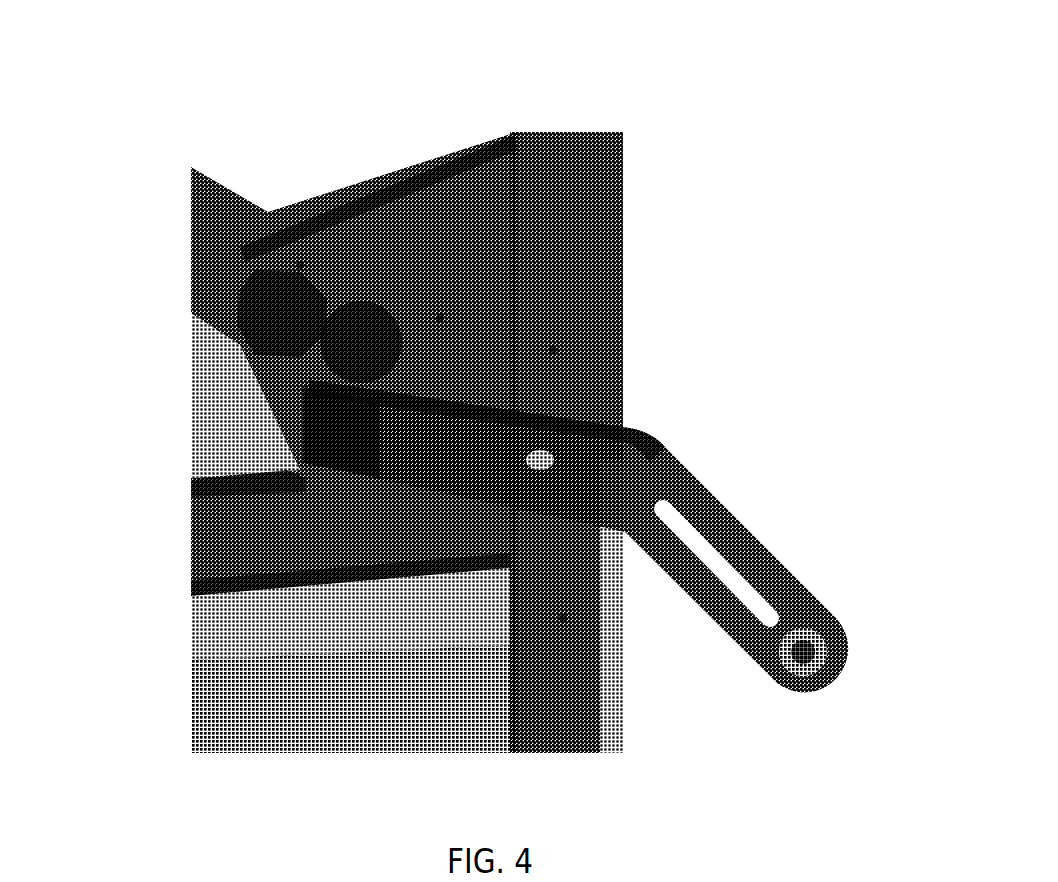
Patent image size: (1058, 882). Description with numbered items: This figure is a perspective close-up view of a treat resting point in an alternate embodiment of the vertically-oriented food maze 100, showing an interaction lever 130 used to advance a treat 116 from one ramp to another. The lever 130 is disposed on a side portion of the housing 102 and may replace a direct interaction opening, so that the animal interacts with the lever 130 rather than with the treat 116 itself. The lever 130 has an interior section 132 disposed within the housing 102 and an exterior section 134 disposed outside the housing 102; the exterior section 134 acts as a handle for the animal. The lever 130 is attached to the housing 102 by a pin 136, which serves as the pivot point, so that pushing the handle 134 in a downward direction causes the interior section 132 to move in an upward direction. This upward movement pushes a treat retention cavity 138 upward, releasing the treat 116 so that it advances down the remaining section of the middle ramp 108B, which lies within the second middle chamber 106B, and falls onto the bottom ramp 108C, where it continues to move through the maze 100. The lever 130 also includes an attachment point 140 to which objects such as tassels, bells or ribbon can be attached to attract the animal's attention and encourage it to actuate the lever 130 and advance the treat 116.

The food maze 100 is at (493, 32).
The housing 102 is at (625, 198).
The second middle chamber 106B is at (383, 150).
The middle ramp 108B is at (407, 368).
The bottom ramp 108C is at (297, 610).
The treat 116 is at (343, 343).
The interaction lever 130 is at (625, 582).
The interior section 132 is at (430, 493).
The exterior section 134 is at (770, 548).
The pin 136 is at (553, 445).
The treat retention cavity 138 is at (313, 393).
The attachment point 140 is at (790, 650).